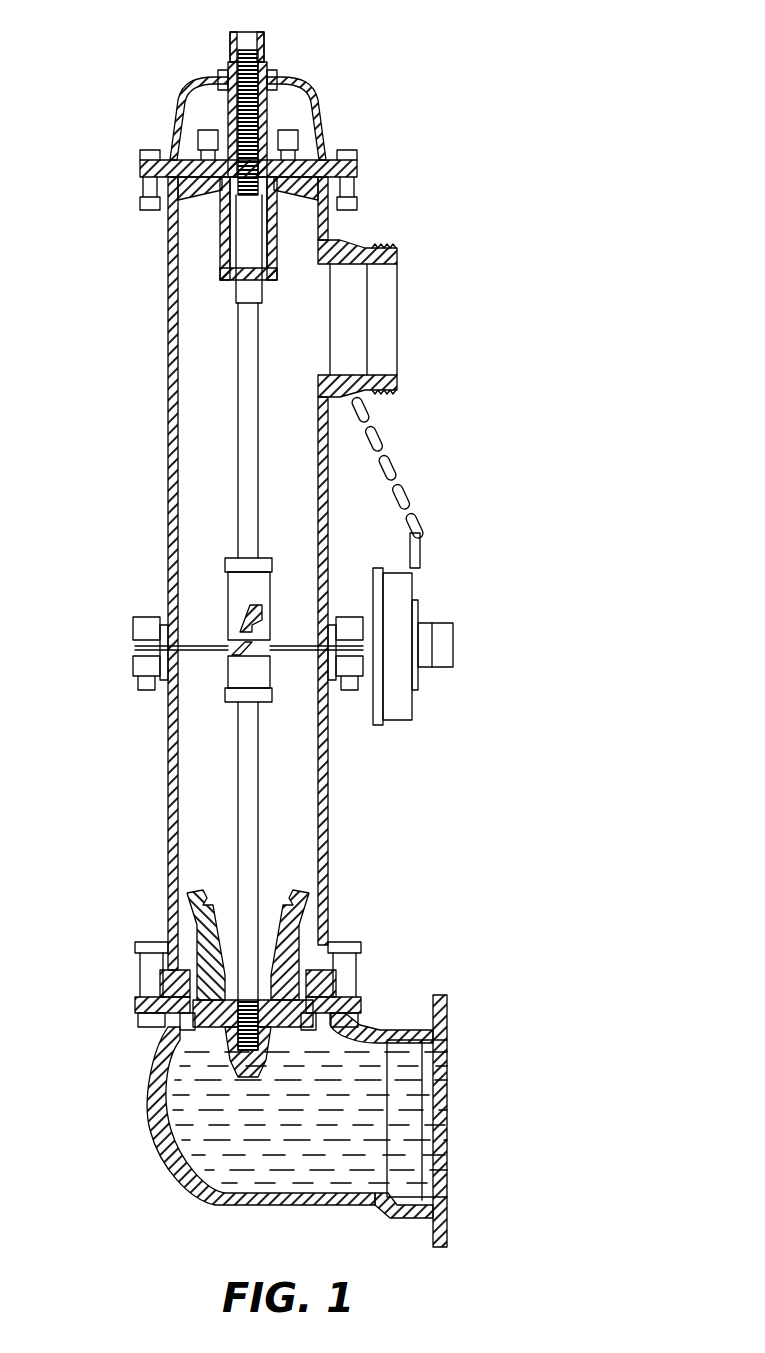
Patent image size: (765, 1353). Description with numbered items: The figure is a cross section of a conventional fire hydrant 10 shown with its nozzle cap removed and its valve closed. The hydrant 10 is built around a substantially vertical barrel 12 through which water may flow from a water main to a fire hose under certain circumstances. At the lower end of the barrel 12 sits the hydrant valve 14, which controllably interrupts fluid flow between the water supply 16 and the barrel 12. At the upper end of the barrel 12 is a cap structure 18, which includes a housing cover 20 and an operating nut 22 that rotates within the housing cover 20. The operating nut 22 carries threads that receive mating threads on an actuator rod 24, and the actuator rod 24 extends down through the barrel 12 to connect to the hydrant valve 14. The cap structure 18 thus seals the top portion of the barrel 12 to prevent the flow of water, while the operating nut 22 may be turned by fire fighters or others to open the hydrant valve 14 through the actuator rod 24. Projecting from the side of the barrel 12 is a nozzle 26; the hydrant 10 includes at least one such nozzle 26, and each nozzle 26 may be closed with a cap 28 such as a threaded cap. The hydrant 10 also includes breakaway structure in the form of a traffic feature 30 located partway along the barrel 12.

The fire hydrant 10 is at (412, 90).
The barrel 12 is at (168, 366).
The hydrant valve 14 is at (305, 940).
The water supply 16 is at (556, 1123).
The cap structure 18 is at (332, 92).
The housing cover 20 is at (357, 170).
The operating nut 22 is at (266, 47).
The actuator rod 24 is at (248, 435).
The nozzle 26 is at (398, 260).
The cap 28 is at (453, 644).
The traffic feature 30 is at (135, 645).